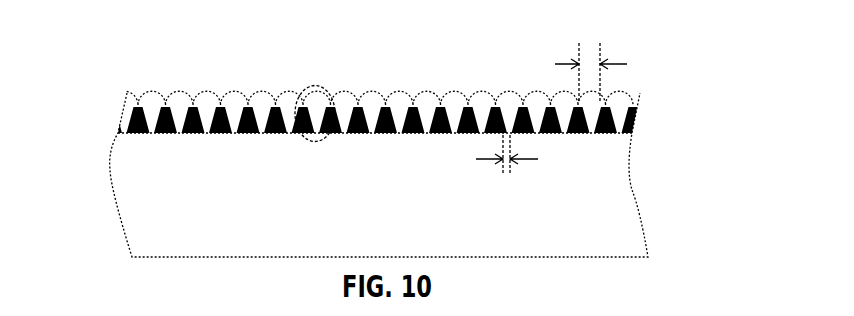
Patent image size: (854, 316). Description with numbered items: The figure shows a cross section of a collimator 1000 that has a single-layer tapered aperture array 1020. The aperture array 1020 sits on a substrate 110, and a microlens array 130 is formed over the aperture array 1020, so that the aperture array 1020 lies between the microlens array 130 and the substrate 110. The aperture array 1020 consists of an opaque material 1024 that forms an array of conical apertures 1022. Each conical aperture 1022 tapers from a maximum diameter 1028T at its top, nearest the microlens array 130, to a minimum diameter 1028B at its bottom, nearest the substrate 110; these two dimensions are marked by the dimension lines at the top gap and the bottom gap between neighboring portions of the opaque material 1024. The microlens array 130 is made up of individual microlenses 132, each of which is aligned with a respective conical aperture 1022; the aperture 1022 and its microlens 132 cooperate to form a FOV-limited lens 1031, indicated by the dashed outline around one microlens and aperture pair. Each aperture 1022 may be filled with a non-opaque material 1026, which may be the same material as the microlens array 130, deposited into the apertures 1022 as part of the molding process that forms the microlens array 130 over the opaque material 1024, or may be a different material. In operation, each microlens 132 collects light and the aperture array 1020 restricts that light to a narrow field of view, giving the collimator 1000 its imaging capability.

The collimator 1000 is at (98, 50).
The substrate 110 is at (633, 182).
The microlens array 130 is at (425, 83).
The microlens 132 is at (312, 95).
The single-layer tapered aperture array 1020 is at (655, 117).
The conical aperture 1022 is at (328, 90).
The opaque material 1024 is at (165, 135).
The non-opaque material 1026 is at (176, 112).
The maximum diameter 1028T is at (561, 73).
The minimum diameter 1028B is at (479, 154).
The FOV-limited lens 1031 is at (330, 86).